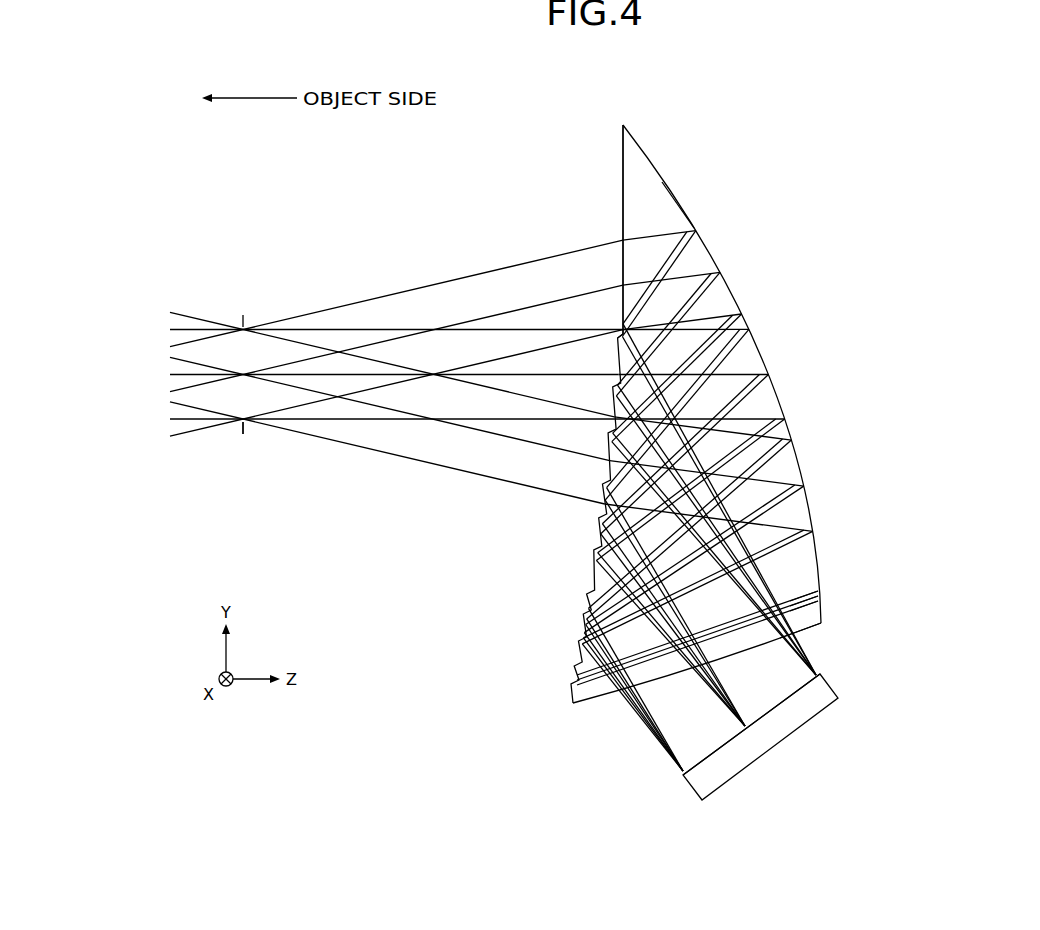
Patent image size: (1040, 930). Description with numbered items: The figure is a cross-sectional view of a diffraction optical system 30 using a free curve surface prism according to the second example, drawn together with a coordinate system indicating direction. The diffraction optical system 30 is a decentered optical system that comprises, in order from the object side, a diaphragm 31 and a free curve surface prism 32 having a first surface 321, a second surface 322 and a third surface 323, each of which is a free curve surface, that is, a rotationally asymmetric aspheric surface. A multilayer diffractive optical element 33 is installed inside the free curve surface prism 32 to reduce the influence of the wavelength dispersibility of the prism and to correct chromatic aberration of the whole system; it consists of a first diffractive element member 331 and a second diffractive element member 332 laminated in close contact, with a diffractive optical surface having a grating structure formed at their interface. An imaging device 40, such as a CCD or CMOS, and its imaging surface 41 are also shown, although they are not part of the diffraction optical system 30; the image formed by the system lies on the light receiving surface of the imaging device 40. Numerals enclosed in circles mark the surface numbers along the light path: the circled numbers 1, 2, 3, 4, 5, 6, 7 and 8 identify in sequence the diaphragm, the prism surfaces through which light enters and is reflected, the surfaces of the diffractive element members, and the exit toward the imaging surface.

The diffraction optical system 30 is at (814, 104).
The diaphragm 31 is at (248, 322).
The free curve surface prism 32 is at (684, 440).
The first surface 321 is at (622, 228).
The second surface 322 is at (699, 222).
The third surface 323 is at (586, 704).
The multilayer diffractive optical element 33 is at (758, 620).
The first diffractive element member 331 is at (697, 633).
The second diffractive element member 332 is at (828, 593).
The imaging device 40 is at (790, 737).
The imaging surface 41 is at (700, 766).
The surface number 1 is at (243, 434).
The surface number 2 is at (622, 192).
The surface number 3 is at (684, 197).
The surface number 4 is at (620, 336).
The surface number 5 is at (810, 586).
The surface number 6 is at (818, 578).
The surface number 7 is at (820, 597).
The surface number 8 is at (821, 623).